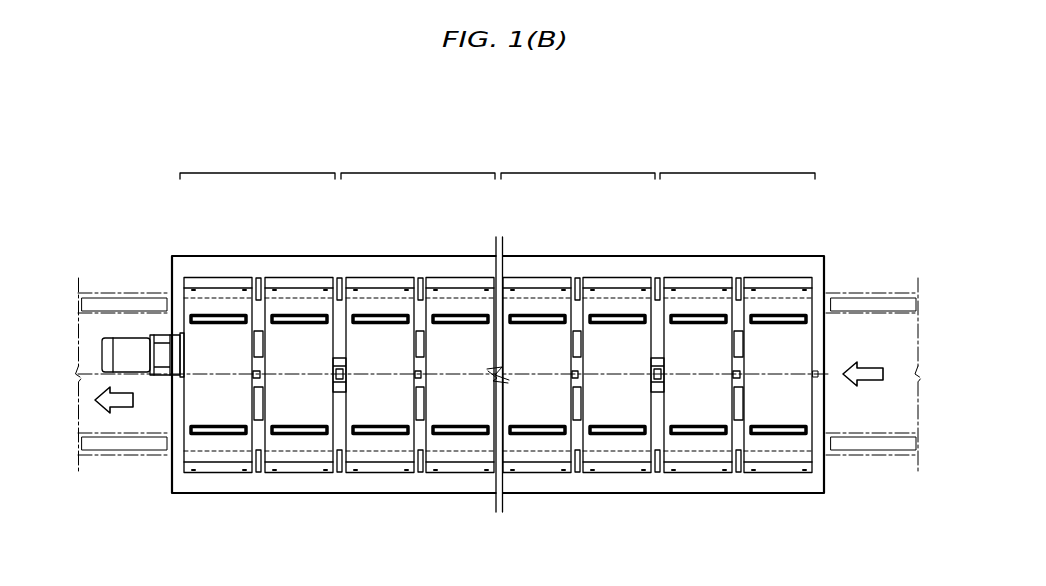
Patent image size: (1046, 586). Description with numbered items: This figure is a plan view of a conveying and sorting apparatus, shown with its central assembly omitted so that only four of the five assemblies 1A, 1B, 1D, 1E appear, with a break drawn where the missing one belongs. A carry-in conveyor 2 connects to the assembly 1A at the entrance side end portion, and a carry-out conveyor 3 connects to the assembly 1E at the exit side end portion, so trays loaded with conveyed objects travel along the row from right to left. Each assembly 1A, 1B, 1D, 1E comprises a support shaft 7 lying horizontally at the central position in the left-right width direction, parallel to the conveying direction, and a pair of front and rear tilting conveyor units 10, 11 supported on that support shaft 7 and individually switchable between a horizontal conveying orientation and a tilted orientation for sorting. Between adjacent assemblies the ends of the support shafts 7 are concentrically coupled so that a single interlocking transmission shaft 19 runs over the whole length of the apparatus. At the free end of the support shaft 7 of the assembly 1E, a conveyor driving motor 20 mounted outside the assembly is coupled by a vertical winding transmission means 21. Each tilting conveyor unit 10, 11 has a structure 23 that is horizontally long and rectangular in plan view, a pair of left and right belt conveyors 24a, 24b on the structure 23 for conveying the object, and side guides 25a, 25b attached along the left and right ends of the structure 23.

The assembly 1A is at (737, 164).
The assembly 1B is at (578, 164).
The assembly 1D is at (418, 164).
The assembly 1E is at (257, 164).
The carry-in conveyor 2 is at (897, 325).
The carry-out conveyor 3 is at (113, 292).
The support shaft 7 is at (254, 373).
The tilting conveyor unit 10 is at (308, 276).
The tilting conveyor unit 11 is at (216, 276).
The interlocking transmission shaft 19 is at (416, 400).
The conveyor driving motor 20 is at (140, 365).
The winding transmission means 21 is at (183, 337).
The structure 23 is at (202, 405).
The belt conveyor 24a is at (278, 436).
The belt conveyor 24b is at (205, 314).
The side guide 25a is at (250, 470).
The side guide 25b is at (235, 279).